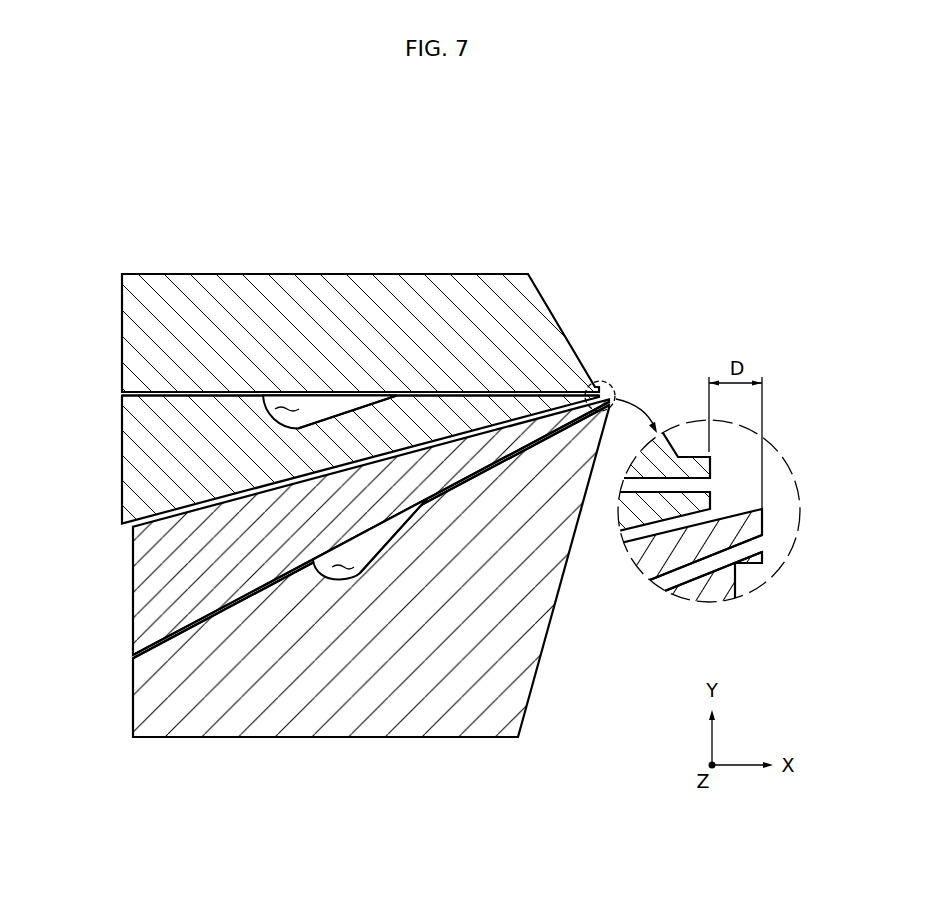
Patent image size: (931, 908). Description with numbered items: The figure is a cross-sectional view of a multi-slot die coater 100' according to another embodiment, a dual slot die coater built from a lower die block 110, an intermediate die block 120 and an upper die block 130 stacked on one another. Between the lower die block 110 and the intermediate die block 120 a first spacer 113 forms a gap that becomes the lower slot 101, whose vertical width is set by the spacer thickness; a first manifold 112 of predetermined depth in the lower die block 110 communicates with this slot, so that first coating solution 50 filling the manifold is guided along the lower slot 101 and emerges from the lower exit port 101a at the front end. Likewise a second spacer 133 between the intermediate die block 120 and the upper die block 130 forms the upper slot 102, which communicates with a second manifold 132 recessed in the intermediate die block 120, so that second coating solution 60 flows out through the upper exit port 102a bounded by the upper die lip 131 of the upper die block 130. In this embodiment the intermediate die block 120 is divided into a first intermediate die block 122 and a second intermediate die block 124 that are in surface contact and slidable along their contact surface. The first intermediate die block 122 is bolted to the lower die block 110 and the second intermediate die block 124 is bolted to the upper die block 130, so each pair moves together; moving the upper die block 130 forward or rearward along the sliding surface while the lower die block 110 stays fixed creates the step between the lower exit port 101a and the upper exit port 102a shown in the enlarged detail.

The multi-slot die coater 100' is at (307, 459).
The upper die block 130 is at (109, 329).
The second spacer 133 is at (163, 391).
The second manifold 132 is at (323, 423).
The upper slot 102 is at (366, 391).
The second coating solution 60 is at (287, 405).
The intermediate die block 120 is at (62, 443).
The second intermediate die block 124 is at (136, 452).
The first intermediate die block 122 is at (146, 584).
The lower die block 110 is at (108, 698).
The first spacer 113 is at (180, 634).
The first manifold 112 is at (371, 574).
The lower slot 101 is at (468, 480).
The first coating solution 50 is at (340, 573).
The upper die lip 131 is at (698, 465).
The upper exit port 102a is at (722, 484).
The lower exit port 101a is at (775, 535).